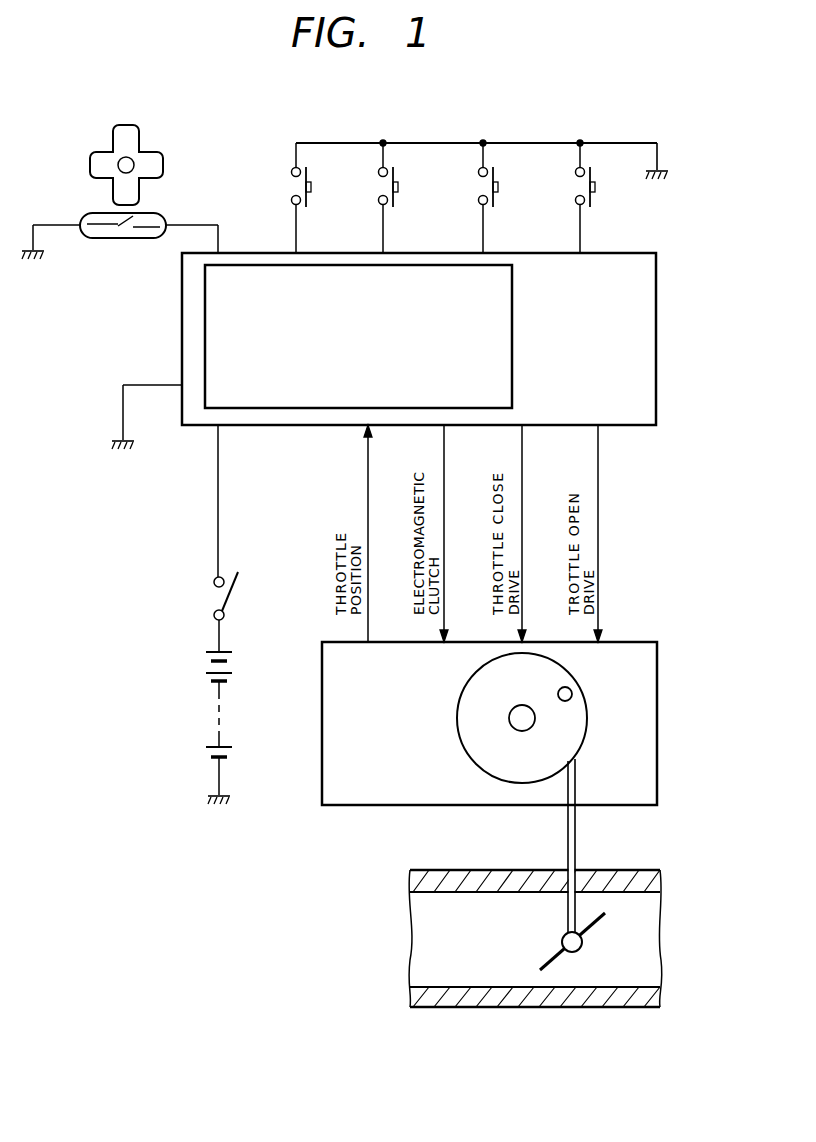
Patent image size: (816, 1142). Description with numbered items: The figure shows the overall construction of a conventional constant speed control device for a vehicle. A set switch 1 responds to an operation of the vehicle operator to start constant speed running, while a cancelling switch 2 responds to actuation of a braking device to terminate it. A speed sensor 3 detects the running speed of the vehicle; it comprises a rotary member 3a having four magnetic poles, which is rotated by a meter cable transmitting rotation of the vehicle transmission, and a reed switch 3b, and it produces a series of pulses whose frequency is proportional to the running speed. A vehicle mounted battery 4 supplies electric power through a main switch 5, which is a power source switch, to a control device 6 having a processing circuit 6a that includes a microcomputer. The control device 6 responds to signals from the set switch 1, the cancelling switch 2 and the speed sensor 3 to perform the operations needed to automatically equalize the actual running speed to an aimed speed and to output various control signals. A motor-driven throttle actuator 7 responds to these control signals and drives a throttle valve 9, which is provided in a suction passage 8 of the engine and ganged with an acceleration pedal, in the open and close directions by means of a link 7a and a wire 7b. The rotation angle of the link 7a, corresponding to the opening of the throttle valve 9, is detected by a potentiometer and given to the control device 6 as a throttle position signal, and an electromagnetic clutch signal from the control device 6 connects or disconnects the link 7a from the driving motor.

The set switch 1 is at (590, 172).
The cancelling switch 2 is at (307, 170).
The speed sensor 3 is at (120, 200).
The rotary member 3a is at (142, 142).
The reed switch 3b is at (106, 238).
The vehicle mounted battery 4 is at (206, 679).
The main switch 5 is at (234, 587).
The control device 6 is at (408, 351).
The processing circuit 6a is at (206, 325).
The throttle actuator 7 is at (516, 723).
The link 7a is at (588, 705).
The wire 7b is at (576, 842).
The suction passage 8 is at (418, 945).
The throttle valve 9 is at (600, 924).